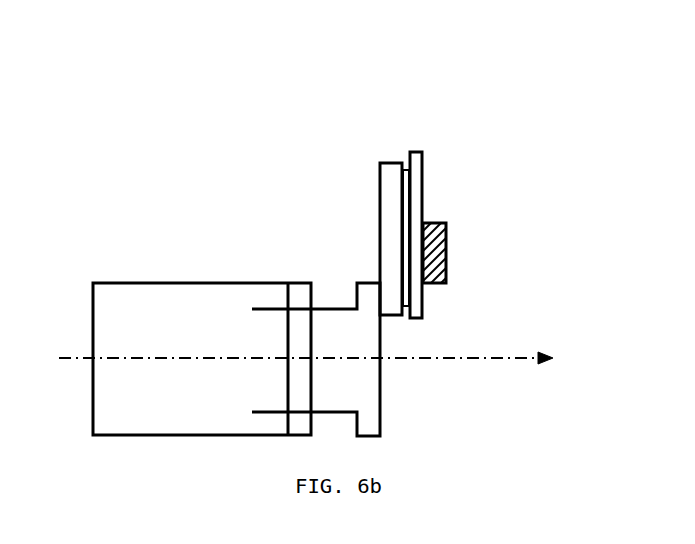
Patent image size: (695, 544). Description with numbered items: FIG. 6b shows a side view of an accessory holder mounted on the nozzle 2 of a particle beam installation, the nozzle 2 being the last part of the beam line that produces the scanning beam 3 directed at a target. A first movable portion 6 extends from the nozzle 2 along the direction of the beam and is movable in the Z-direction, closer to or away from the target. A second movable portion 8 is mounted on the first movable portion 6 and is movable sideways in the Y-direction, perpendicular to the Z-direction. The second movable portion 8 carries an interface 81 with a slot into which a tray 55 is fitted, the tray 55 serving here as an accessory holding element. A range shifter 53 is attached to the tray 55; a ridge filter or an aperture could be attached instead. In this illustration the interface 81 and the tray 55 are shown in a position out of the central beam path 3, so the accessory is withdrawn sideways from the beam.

The nozzle 2 is at (92, 328).
The scanning beam 3 is at (460, 362).
The first movable portion 6 is at (355, 290).
The second movable portion 8 is at (392, 163).
The interface 81 is at (405, 172).
The tray 55 is at (422, 153).
The range shifter 53 is at (432, 223).